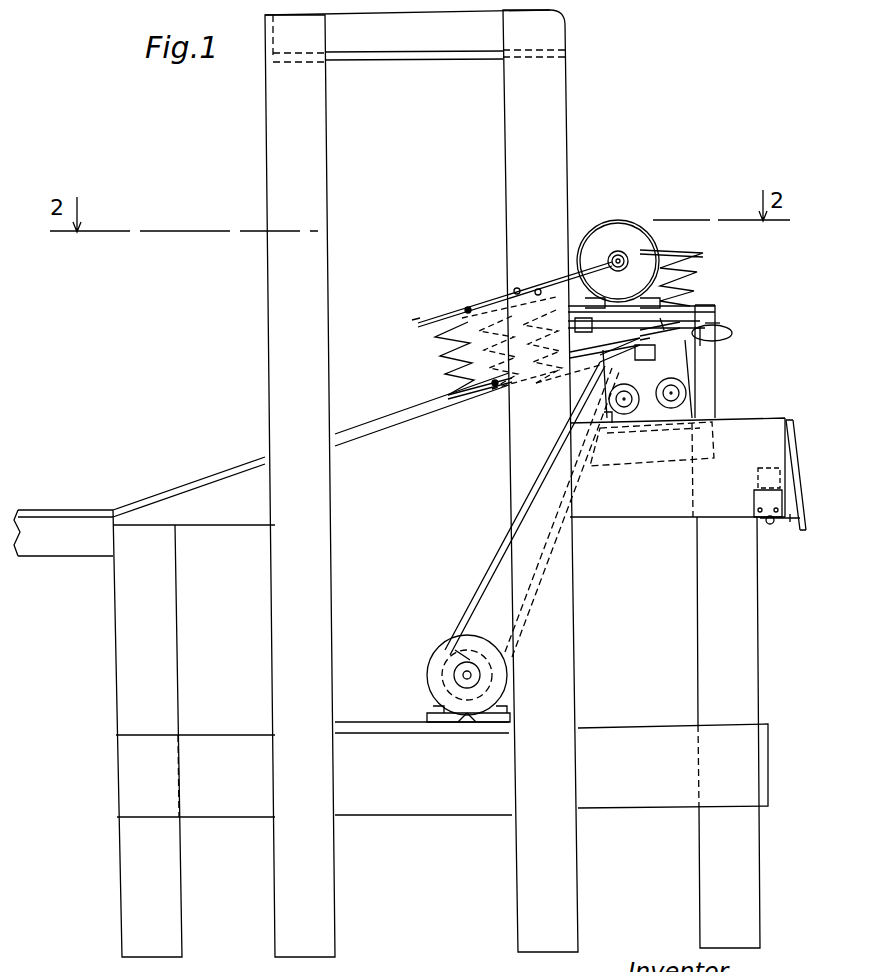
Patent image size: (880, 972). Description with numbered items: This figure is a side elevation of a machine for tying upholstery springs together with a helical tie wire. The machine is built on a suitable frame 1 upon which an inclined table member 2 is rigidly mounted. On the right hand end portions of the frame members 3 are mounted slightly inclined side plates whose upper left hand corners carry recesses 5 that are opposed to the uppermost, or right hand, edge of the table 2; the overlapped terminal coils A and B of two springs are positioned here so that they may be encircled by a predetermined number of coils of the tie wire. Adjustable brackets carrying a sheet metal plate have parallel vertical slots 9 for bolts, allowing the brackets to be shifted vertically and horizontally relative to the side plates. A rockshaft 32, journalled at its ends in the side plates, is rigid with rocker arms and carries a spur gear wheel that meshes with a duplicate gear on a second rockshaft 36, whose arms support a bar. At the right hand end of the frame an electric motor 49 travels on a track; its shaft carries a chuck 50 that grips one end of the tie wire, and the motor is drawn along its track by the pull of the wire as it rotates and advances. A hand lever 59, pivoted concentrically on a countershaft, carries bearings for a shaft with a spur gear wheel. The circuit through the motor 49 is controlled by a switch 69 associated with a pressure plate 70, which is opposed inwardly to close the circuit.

The frame 1 is at (122, 691).
The inclined table member 2 is at (222, 474).
The frame members 3 is at (627, 510).
The recesses 5 is at (653, 356).
The parallel vertical slots 9 is at (680, 367).
The rockshaft 32 is at (686, 393).
The rockshaft 36 is at (624, 399).
The electric motor 49 is at (618, 230).
The chuck 50 is at (621, 258).
The hand lever 59 is at (733, 334).
The switch 69 is at (767, 524).
The pressure plate 70 is at (783, 463).
The terminal coil A is at (712, 327).
The terminal coil B is at (645, 343).